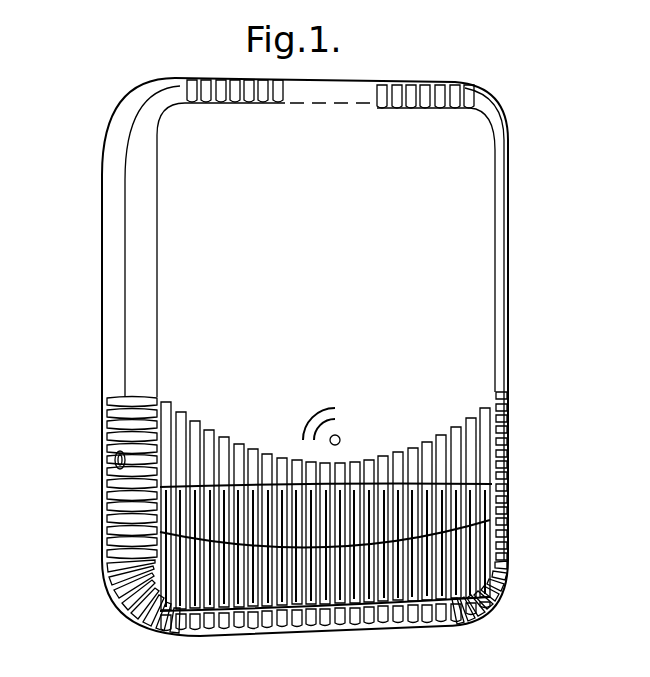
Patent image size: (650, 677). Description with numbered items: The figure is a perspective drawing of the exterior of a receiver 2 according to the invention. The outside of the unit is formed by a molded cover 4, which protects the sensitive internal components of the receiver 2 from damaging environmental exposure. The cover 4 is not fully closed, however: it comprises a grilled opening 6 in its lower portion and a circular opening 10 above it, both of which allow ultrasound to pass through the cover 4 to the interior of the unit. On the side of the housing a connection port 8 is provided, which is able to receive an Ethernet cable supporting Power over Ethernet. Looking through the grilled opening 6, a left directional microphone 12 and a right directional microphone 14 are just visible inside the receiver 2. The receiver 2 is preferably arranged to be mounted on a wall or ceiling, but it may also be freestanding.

The receiver 2 is at (531, 137).
The molded cover 4 is at (458, 221).
The grilled opening 6 is at (478, 495).
The connection port 8 is at (113, 458).
The circular opening 10 is at (340, 436).
The left directional microphone 12 is at (160, 550).
The right directional microphone 14 is at (470, 537).